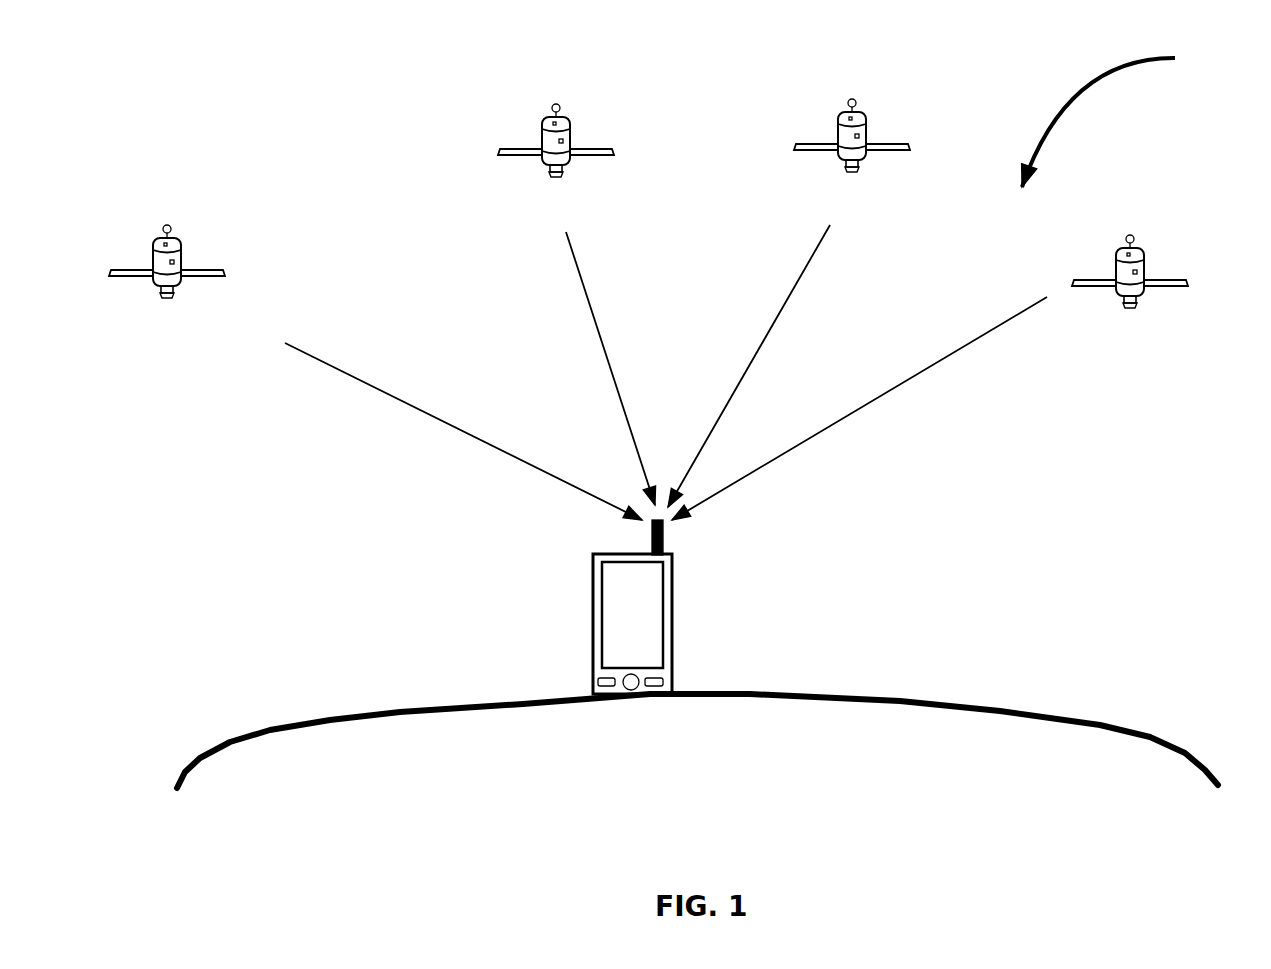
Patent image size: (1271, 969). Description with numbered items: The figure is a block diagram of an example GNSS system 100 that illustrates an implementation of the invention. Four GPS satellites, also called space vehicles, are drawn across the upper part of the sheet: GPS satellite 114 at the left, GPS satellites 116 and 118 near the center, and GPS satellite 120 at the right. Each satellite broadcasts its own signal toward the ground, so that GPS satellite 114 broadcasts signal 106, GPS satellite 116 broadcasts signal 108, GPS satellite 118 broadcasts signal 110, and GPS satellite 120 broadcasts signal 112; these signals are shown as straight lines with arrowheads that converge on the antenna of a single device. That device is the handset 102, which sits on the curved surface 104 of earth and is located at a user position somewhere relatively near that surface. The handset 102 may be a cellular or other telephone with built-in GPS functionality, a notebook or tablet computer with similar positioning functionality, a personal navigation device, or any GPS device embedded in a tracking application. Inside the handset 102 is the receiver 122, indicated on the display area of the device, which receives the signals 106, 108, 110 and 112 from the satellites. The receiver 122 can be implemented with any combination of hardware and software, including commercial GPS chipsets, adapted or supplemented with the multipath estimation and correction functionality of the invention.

The GNSS system 100 is at (1130, 120).
The handset 102 is at (672, 640).
The surface of earth 104 is at (523, 708).
The signal 106 is at (435, 418).
The signal 108 is at (590, 316).
The signal 110 is at (775, 318).
The signal 112 is at (832, 418).
The GPS satellite 114 is at (168, 282).
The GPS satellite 116 is at (556, 161).
The GPS satellite 118 is at (850, 156).
The GPS satellite 120 is at (1130, 291).
The receiver 122 is at (632, 605).